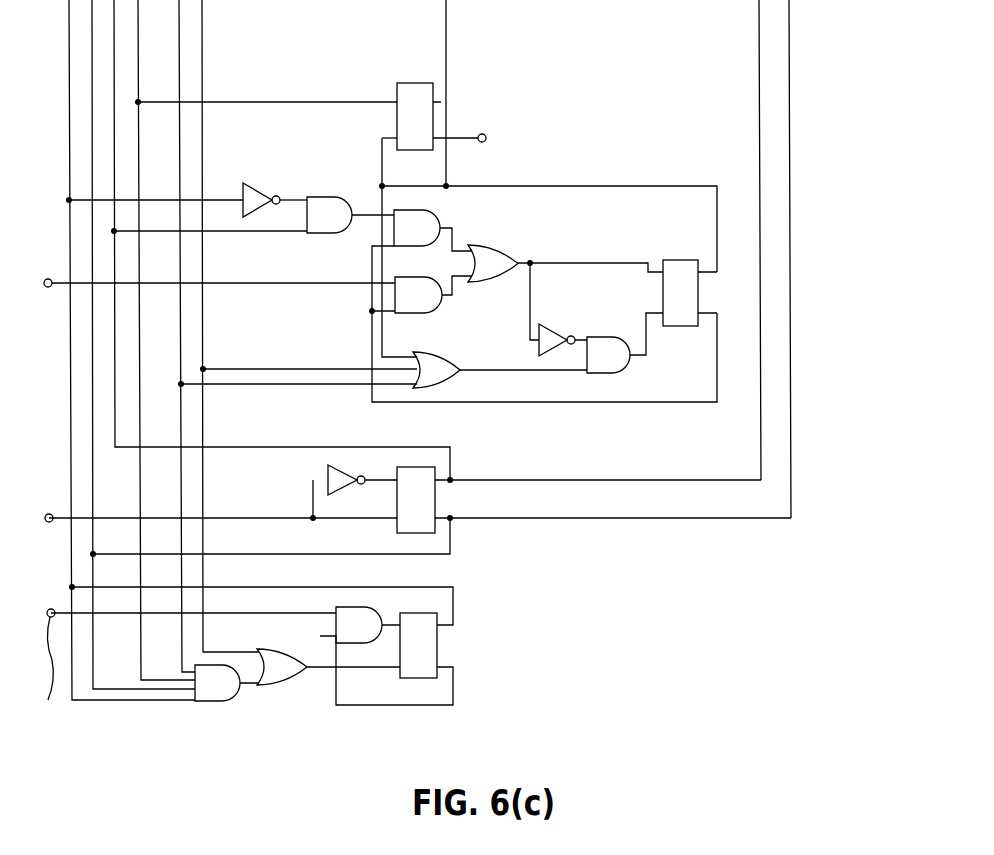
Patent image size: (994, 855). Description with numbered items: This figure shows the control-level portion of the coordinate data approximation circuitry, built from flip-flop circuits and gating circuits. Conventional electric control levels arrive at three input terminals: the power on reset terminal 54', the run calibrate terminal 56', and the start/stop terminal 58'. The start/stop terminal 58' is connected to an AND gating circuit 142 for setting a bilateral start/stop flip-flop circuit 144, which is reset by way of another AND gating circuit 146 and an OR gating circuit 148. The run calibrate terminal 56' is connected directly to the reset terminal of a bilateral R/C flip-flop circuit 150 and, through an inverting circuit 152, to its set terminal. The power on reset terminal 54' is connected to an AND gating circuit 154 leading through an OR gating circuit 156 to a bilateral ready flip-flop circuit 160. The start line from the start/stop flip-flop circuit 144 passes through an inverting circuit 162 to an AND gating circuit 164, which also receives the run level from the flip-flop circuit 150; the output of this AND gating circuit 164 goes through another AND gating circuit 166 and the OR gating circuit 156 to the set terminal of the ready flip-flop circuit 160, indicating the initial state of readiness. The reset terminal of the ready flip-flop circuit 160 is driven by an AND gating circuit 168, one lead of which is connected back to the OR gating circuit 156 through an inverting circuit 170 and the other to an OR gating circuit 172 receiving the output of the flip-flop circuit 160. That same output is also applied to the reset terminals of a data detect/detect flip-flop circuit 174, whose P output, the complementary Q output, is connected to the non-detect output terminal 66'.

The power on reset terminal 54' is at (212, 293).
The run calibrate terminal 56' is at (47, 510).
The start/stop terminal 58' is at (57, 671).
The non-detect output terminal 66' is at (508, 127).
The AND gating circuit 142 is at (336, 627).
The start/stop flip-flop circuit 144 is at (438, 657).
The AND gating circuit 146 is at (203, 702).
The OR gating circuit 148 is at (260, 686).
The R/C flip-flop circuit 150 is at (397, 526).
The inverting circuit 152 is at (338, 488).
The AND gating circuit 154 is at (403, 314).
The OR gating circuit 156 is at (500, 248).
The ready flip-flop circuit 160 is at (668, 262).
The inverting circuit 162 is at (270, 190).
The AND gating circuit 164 is at (320, 197).
The AND gating circuit 166 is at (430, 218).
The AND gating circuit 168 is at (613, 330).
The inverting circuit 170 is at (554, 330).
The OR gating circuit 172 is at (442, 360).
The data detect/detect flip-flop circuit 174 is at (412, 83).